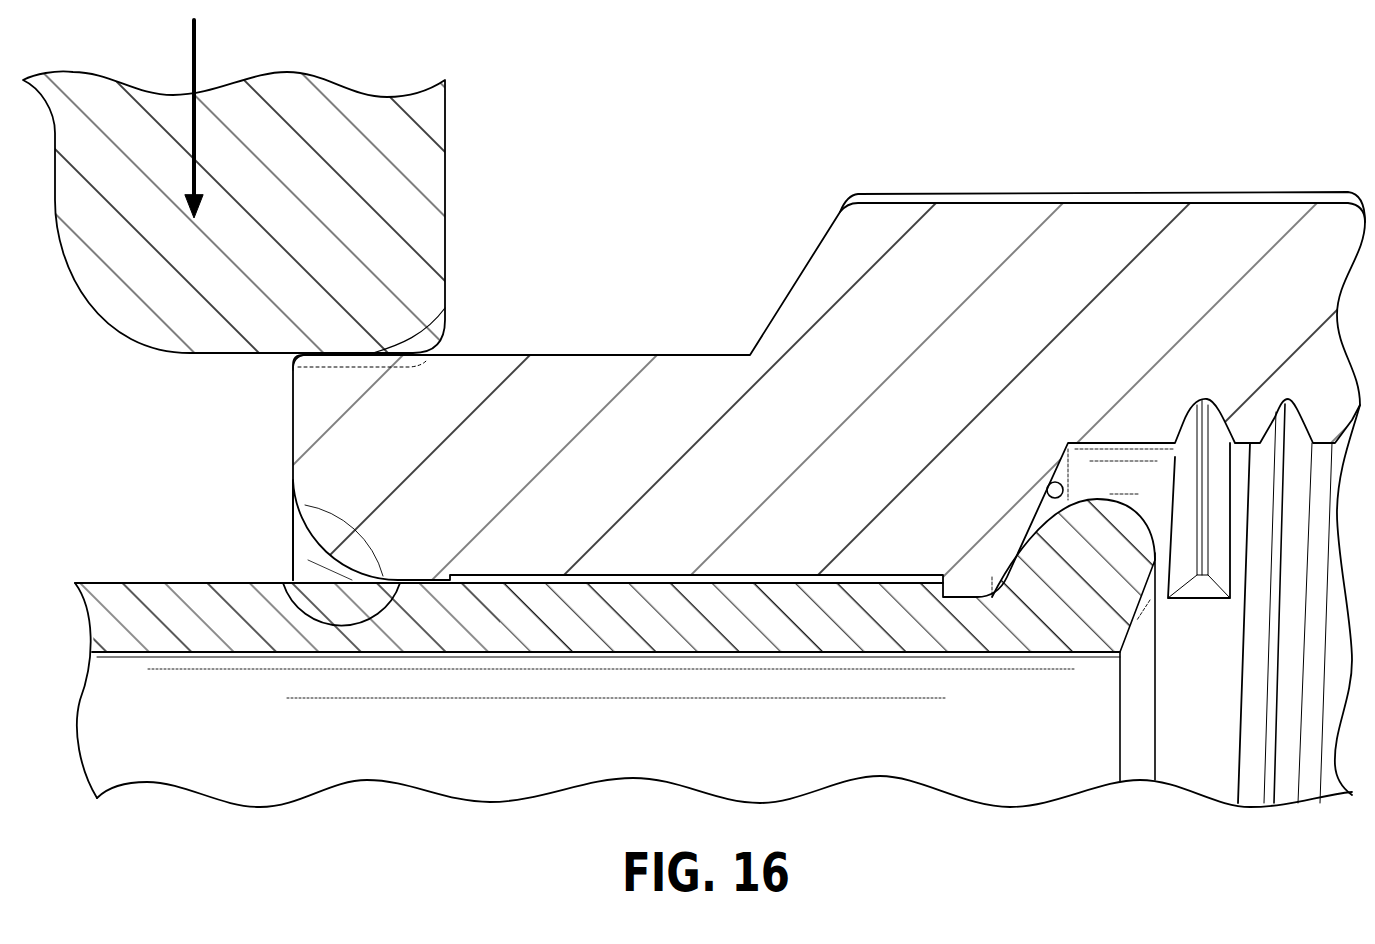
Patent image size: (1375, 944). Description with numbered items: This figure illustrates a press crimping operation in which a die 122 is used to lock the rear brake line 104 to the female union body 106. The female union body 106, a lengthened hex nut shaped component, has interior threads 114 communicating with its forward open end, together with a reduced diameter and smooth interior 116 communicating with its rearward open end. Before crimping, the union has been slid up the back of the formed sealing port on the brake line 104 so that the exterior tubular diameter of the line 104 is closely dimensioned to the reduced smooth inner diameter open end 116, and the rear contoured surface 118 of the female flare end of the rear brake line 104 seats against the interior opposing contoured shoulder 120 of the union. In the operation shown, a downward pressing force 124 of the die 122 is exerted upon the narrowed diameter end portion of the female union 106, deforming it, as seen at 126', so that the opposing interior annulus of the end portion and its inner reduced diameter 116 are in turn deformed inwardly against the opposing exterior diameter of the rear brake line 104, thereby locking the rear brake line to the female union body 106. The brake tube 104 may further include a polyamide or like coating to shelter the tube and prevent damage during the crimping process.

The rear brake line 104 is at (195, 598).
The female union body 106 is at (1005, 194).
The interior threads 114 is at (1285, 428).
The reduced diameter smooth interior 116 is at (283, 583).
The rear contoured surface 118 is at (1033, 558).
The interior opposing contoured shoulder 120 is at (1040, 500).
The die 122 is at (430, 222).
The downward pressing force 124 is at (197, 52).
The deformed end portion 126' is at (407, 310).